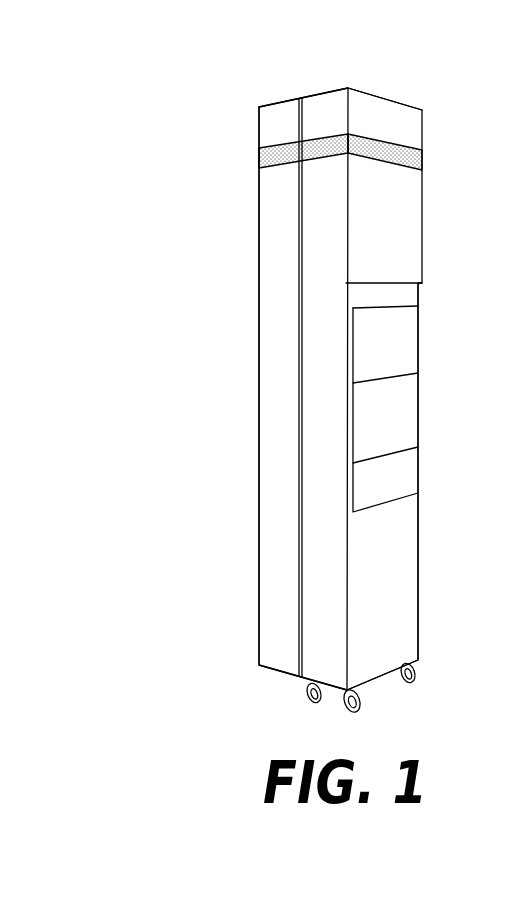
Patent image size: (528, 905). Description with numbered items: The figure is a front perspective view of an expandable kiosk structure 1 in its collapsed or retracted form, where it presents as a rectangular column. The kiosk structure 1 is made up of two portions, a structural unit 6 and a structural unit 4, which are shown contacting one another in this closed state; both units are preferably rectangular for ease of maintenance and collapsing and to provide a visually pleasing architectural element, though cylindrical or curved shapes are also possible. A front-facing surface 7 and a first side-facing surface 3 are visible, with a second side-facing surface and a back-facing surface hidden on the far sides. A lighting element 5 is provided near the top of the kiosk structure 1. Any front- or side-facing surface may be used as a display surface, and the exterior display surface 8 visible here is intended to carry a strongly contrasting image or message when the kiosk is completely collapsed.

The kiosk structure 1 is at (202, 240).
The first side-facing surface 3 is at (399, 580).
The structural unit 4 is at (277, 570).
The lighting element 5 is at (249, 162).
The structural unit 6 is at (383, 112).
The front-facing surface 7 is at (270, 332).
The display surface 8 is at (388, 348).